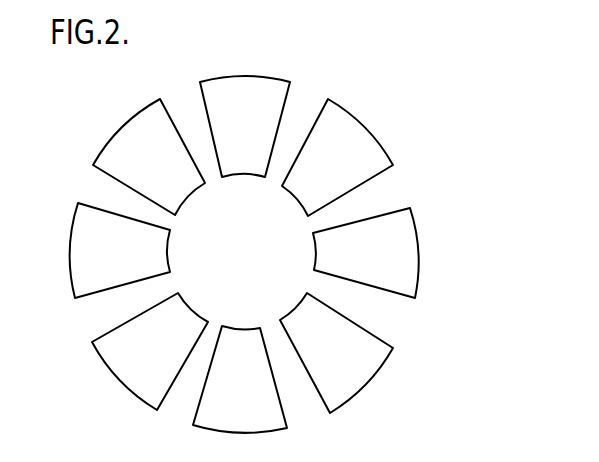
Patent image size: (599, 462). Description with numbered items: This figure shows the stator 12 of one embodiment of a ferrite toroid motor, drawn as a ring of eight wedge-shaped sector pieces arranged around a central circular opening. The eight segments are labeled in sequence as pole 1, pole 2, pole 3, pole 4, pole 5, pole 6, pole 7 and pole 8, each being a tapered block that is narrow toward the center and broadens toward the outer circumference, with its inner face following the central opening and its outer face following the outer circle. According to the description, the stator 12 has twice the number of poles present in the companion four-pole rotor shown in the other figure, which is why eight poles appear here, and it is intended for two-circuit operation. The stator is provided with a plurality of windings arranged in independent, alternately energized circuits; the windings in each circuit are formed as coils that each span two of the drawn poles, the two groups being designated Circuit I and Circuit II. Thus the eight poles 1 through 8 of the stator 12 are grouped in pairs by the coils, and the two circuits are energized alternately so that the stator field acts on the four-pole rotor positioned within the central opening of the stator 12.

The stator 12 is at (450, 139).
The sector segment 1 is at (245, 126).
The sector segment 2 is at (337, 157).
The sector segment 3 is at (366, 253).
The sector segment 4 is at (336, 353).
The sector segment 5 is at (240, 379).
The sector segment 6 is at (150, 351).
The sector segment 7 is at (120, 250).
The sector segment 8 is at (149, 157).